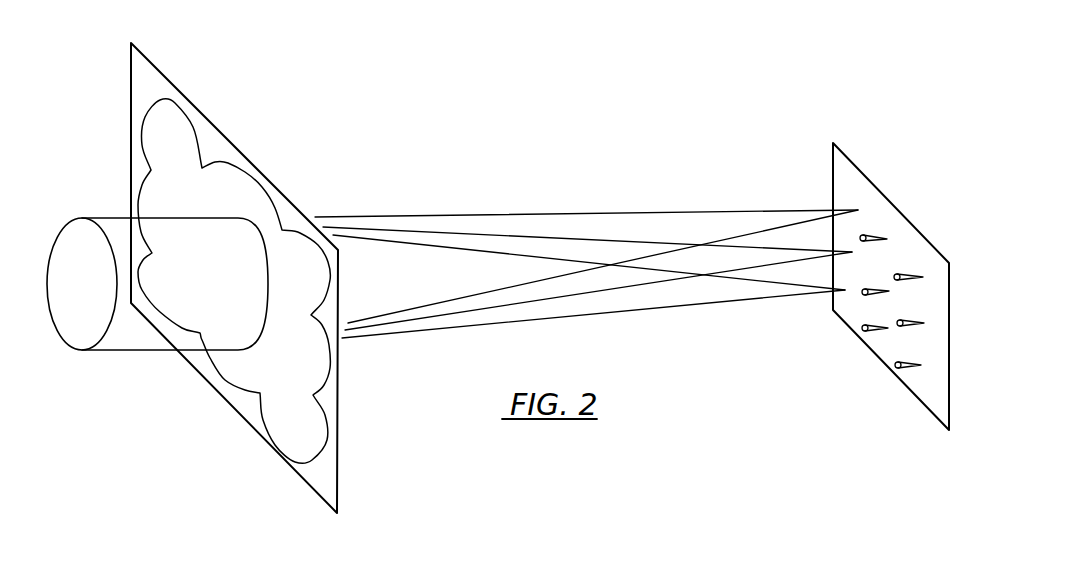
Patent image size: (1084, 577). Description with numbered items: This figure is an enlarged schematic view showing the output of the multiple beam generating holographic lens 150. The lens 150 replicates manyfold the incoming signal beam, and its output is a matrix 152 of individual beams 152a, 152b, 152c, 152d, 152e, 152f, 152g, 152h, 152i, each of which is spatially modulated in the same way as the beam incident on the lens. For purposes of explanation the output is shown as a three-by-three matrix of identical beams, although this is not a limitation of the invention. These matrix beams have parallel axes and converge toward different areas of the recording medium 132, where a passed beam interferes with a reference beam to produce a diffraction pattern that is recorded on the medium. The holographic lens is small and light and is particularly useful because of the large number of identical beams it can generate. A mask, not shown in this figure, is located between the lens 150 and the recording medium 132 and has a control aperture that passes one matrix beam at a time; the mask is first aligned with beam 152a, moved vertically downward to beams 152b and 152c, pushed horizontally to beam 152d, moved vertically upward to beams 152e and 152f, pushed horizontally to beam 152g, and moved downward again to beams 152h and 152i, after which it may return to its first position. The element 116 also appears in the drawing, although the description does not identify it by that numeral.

The holographic lens 150 is at (168, 79).
The lens 116 is at (129, 333).
The matrix of individual beams 152 is at (586, 206).
The matrix beam 152a is at (393, 213).
The matrix beam 152b is at (480, 232).
The matrix beam 152c is at (555, 257).
The matrix beam 152d is at (878, 333).
The matrix beam 152e is at (873, 298).
The matrix beam 152f is at (868, 234).
The matrix beam 152g is at (907, 273).
The matrix beam 152h is at (912, 328).
The matrix beam 152i is at (905, 368).
The recording medium 132 is at (833, 186).